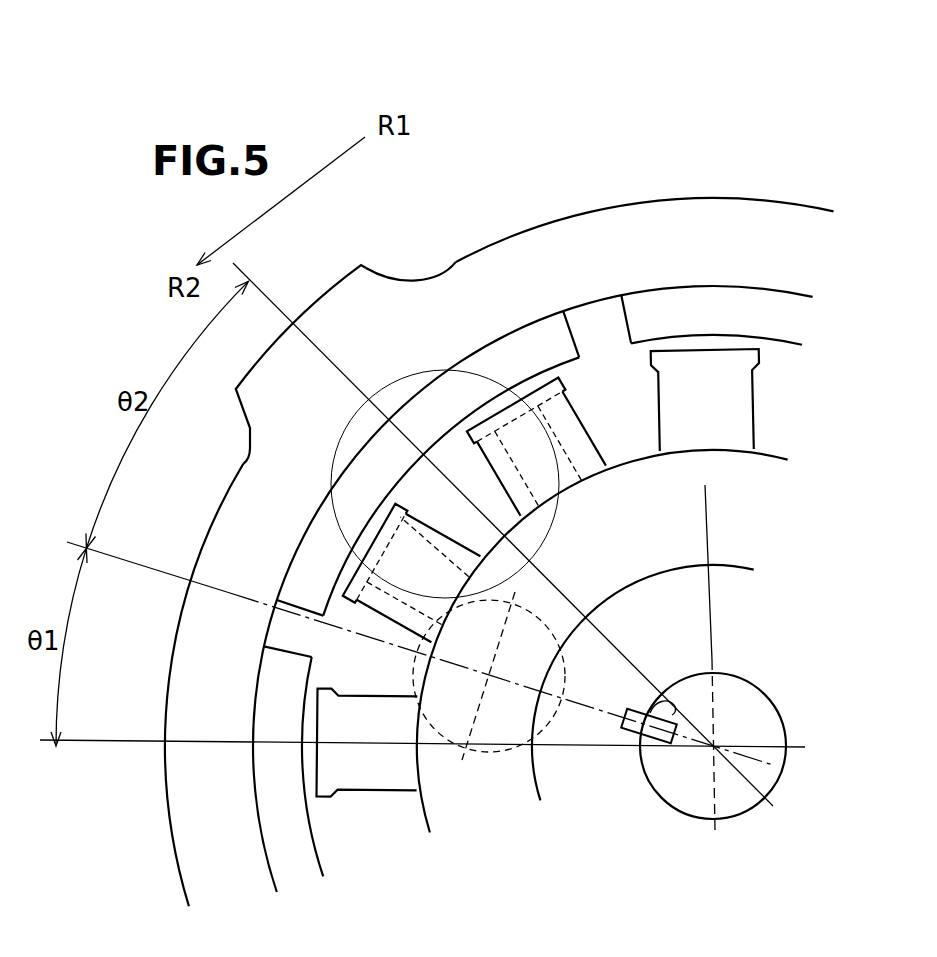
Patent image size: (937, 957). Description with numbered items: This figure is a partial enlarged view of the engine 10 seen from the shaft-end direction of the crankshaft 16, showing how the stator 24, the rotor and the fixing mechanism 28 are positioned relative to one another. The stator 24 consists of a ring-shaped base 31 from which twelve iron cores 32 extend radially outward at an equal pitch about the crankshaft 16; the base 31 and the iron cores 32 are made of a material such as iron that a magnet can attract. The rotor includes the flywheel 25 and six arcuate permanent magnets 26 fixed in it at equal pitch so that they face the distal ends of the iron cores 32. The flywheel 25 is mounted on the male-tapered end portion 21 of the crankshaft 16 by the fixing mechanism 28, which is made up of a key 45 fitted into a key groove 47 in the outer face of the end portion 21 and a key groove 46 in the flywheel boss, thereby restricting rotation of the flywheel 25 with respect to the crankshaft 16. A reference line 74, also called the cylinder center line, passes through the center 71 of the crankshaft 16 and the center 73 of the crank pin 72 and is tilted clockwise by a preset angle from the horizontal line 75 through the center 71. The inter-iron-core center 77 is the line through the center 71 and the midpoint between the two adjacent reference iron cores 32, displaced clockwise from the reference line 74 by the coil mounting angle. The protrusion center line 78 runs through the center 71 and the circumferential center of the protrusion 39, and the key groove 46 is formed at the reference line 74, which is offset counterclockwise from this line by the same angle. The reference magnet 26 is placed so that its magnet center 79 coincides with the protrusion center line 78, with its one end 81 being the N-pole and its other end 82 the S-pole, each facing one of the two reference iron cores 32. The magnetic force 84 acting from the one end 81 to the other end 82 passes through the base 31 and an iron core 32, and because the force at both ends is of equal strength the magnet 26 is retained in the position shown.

The engine 10 is at (652, 108).
The crankshaft 16 is at (783, 773).
The end portion 21 is at (757, 710).
The stator 24 is at (750, 517).
The flywheel 25 is at (718, 215).
The magnets 26 is at (760, 302).
The fixing mechanism 28 is at (618, 733).
The base 31 is at (737, 485).
The iron cores 32 is at (590, 336).
The protrusion 39 is at (367, 282).
The key 45 is at (632, 740).
The key groove 46 is at (660, 700).
The key groove 47 is at (638, 737).
The center of the crankshaft 71 is at (740, 805).
The crank pin 72 is at (415, 668).
The center of the crank pin 73 is at (487, 677).
The reference line 74 is at (515, 687).
The horizontal line 75 is at (349, 745).
The inter-iron-core center 77 is at (578, 413).
The protrusion center line 78 is at (318, 348).
The magnet center 79 is at (405, 438).
The one end 81 is at (527, 326).
The other end 82 is at (310, 563).
The magnetic force 84 is at (525, 558).